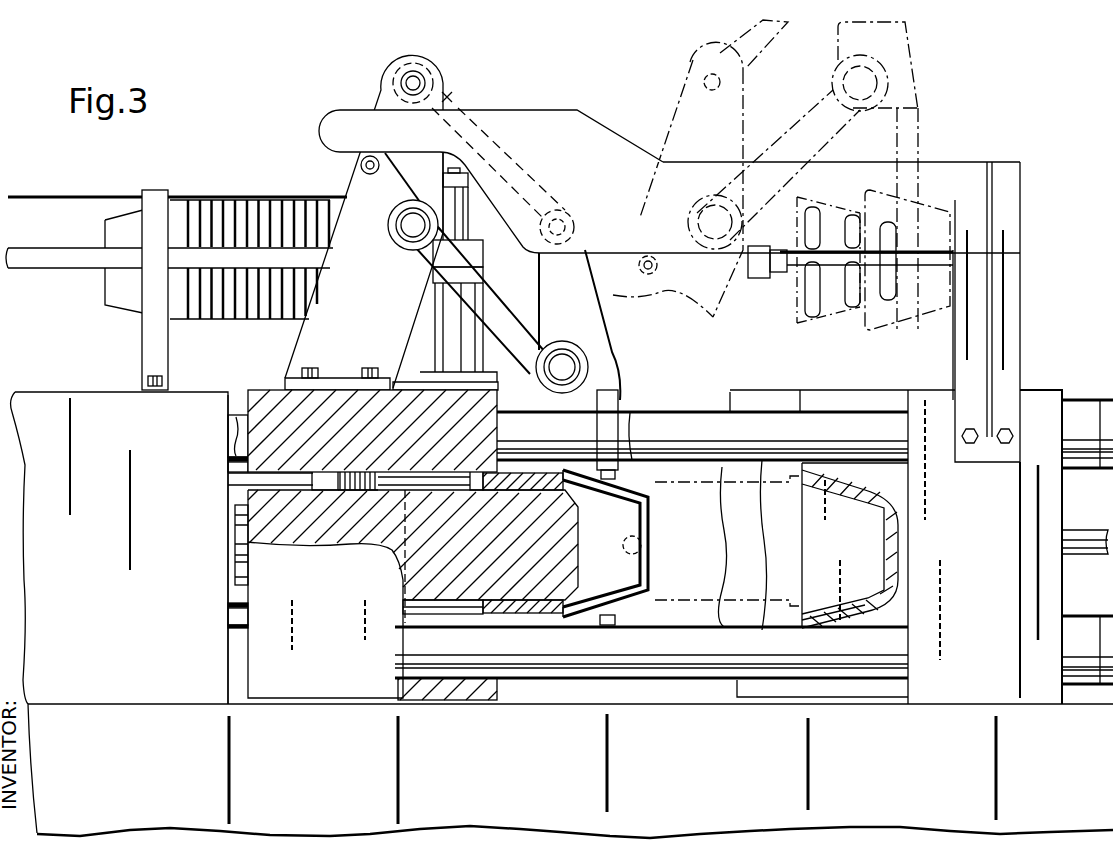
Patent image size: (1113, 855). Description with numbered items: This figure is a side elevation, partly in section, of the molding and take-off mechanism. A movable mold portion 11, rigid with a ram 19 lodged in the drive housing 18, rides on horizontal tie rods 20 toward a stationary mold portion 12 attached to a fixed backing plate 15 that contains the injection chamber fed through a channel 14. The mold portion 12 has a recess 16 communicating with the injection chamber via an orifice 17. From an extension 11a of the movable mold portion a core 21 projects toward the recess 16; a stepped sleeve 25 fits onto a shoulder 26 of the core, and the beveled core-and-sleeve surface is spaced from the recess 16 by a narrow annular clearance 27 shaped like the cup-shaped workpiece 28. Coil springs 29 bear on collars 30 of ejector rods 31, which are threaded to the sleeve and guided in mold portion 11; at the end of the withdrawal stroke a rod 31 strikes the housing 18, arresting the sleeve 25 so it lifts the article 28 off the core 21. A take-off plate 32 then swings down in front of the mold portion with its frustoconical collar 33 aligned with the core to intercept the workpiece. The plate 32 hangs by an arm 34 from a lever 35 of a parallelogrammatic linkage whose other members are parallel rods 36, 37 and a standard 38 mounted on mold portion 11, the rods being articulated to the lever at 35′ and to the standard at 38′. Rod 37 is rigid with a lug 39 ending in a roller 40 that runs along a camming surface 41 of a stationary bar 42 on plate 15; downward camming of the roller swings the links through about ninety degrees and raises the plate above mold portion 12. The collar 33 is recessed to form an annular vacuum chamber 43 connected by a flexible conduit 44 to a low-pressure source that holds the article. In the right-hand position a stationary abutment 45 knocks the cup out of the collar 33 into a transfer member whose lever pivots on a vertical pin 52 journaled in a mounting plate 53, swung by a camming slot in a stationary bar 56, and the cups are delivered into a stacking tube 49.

The movable mold portion 11 is at (337, 690).
The extension 11a is at (447, 702).
The stationary mold portion 12 is at (855, 697).
The channel 14 is at (1090, 548).
The fixed backing plate 15 is at (968, 695).
The recess 16 is at (858, 592).
The orifice 17 is at (898, 545).
The housing for the mold drive 18 is at (90, 688).
The ram 19 is at (228, 572).
The tie rods 20 is at (728, 545).
The mold core 21 is at (521, 618).
The stepped sleeve 25 is at (522, 476).
The shoulder 26 is at (500, 625).
The annular clearance 27 is at (858, 605).
The workpiece 28 is at (232, 200).
The coil springs 29 is at (362, 492).
The collars 30 is at (322, 492).
The ejector rods 31 is at (228, 482).
The take-off plate 32 is at (603, 618).
The frustoconical collar 33 is at (636, 495).
The arm 34 is at (607, 413).
The lever 35 is at (600, 342).
The articulation point 35′ is at (536, 385).
The parallel rod 36 is at (450, 94).
The parallel rod 37 is at (854, 144).
The standard 38 is at (307, 352).
The articulation point 38′ is at (410, 246).
The lug 39 is at (378, 193).
The roller 40 is at (358, 166).
The camming surface 41 is at (477, 188).
The stationary bar 42 is at (562, 108).
The annular vacuum chamber 43 is at (640, 594).
The flexible conduit 44 is at (643, 553).
The stationary abutment 45 is at (889, 318).
The stacking tube 49 is at (76, 195).
The vertical pin 52 is at (465, 232).
The mounting plate 53 is at (328, 366).
The stationary bar 56 is at (443, 176).